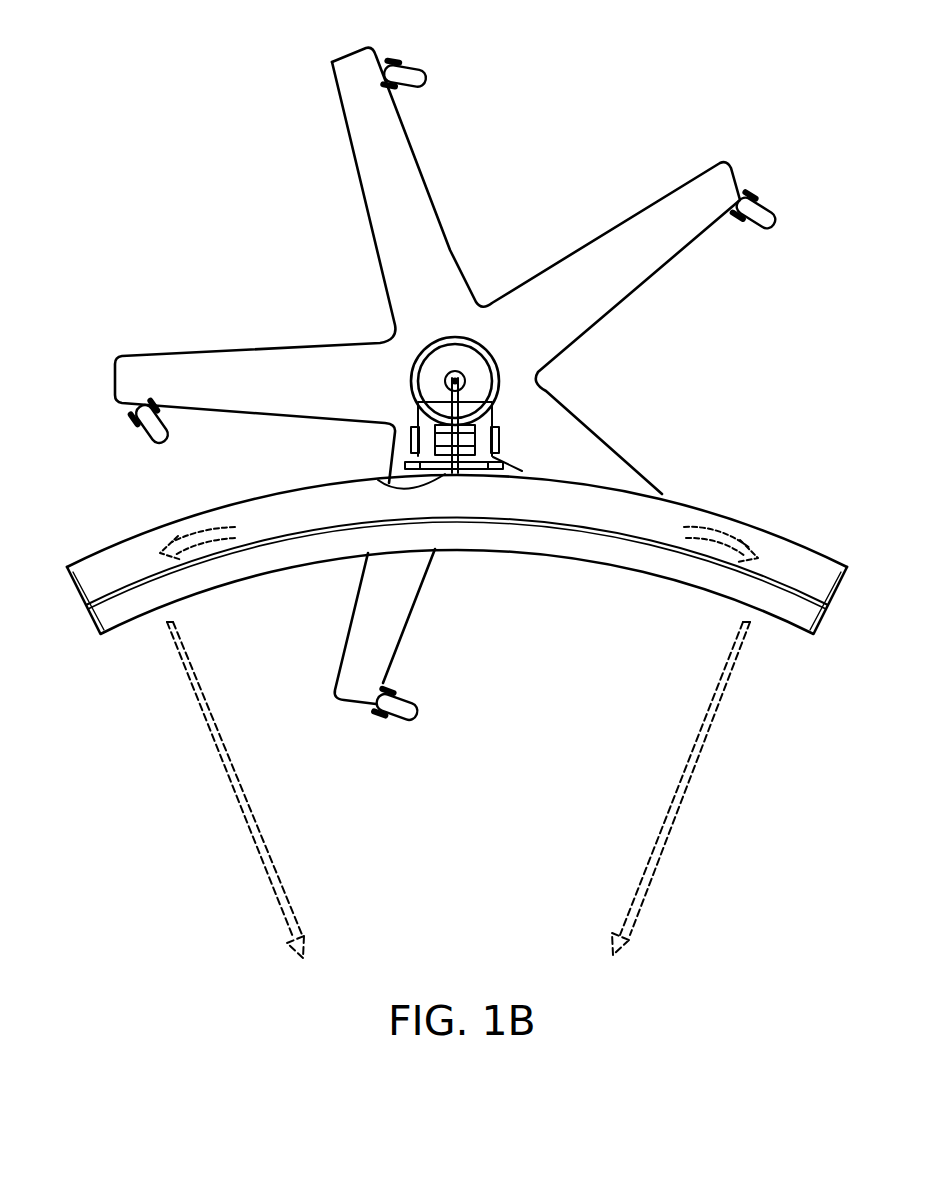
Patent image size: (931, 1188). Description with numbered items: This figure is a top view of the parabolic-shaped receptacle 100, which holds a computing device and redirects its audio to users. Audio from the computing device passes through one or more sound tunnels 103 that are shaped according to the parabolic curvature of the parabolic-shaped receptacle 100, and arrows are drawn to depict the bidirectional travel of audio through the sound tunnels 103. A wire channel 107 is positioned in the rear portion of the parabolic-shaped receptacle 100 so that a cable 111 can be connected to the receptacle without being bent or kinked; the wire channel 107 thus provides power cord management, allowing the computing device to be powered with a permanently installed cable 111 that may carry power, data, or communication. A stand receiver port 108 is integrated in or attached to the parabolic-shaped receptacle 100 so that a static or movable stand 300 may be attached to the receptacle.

The parabolic-shaped receptacle 100 is at (118, 503).
The sound tunnels 103 is at (717, 529).
The wire channel 107 is at (386, 489).
The stand receiver port 108 is at (441, 337).
The cable 111 is at (480, 393).
The stand 300 is at (420, 160).